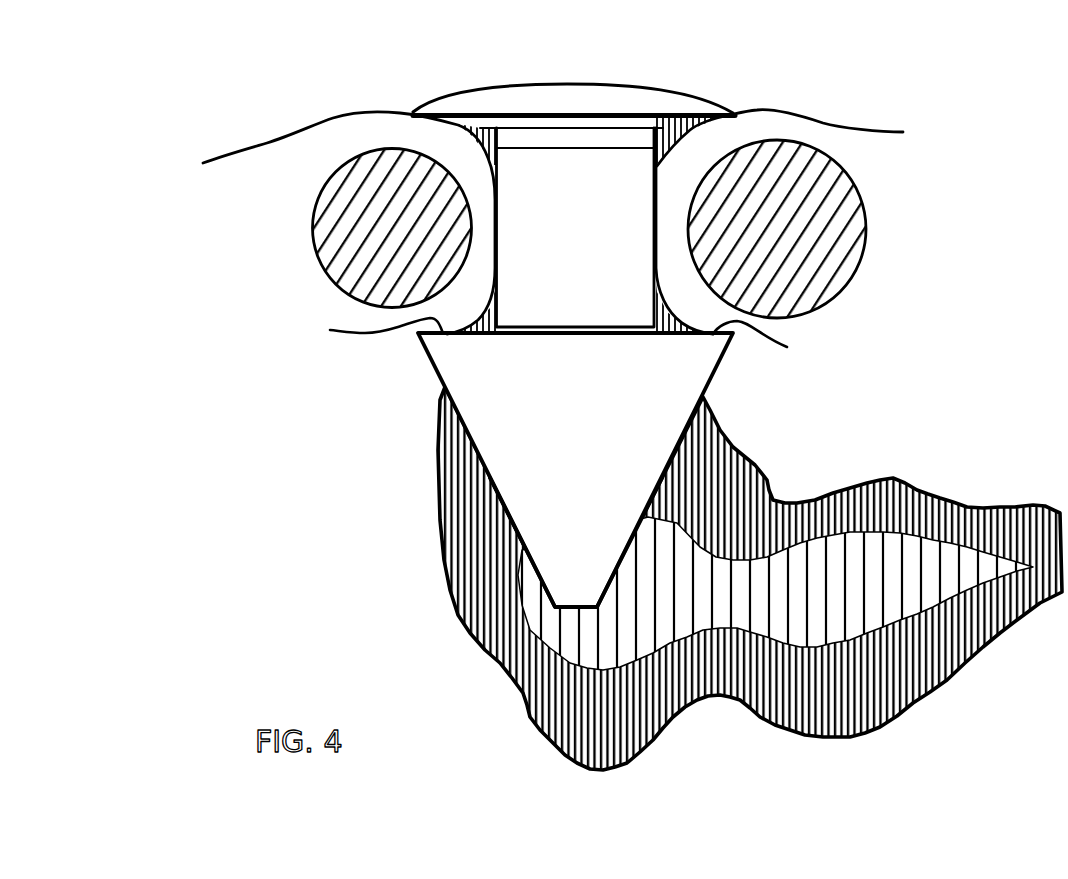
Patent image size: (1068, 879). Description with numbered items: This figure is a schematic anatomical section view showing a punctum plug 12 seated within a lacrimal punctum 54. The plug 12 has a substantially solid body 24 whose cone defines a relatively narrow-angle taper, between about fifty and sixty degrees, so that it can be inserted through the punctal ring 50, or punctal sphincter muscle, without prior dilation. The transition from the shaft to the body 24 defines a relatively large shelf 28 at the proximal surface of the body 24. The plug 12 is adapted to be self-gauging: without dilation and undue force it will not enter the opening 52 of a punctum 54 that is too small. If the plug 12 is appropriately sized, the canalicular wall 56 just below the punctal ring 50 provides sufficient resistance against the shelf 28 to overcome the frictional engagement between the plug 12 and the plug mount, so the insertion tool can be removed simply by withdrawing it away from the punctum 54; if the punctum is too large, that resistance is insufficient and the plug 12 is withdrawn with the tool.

The punctum plug 12 is at (482, 382).
The body 24 is at (550, 528).
The shelf 28 is at (345, 331).
The punctal ring 50 is at (357, 237).
The opening 52 is at (660, 170).
The punctum 54 is at (683, 313).
The canalicular wall 56 is at (787, 347).